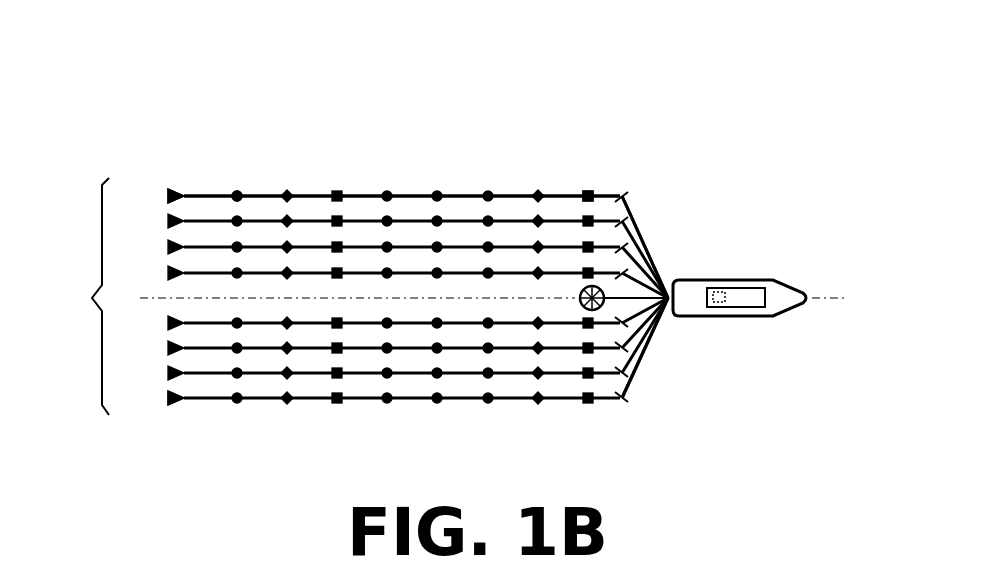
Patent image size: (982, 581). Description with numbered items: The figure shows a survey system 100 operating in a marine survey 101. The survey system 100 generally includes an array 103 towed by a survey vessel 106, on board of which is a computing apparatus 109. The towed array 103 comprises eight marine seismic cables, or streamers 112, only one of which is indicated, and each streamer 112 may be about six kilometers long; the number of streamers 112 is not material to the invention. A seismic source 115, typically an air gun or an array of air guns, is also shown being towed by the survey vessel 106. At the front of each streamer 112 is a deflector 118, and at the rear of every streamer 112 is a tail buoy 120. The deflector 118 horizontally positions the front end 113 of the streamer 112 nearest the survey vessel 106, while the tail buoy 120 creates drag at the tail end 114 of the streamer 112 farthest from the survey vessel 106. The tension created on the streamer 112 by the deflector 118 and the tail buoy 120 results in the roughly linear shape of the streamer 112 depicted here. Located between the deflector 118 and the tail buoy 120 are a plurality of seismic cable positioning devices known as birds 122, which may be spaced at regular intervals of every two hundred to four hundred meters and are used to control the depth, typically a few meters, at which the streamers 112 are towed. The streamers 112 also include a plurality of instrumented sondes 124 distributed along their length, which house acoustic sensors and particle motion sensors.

The survey system 100 is at (246, 114).
The marine survey 101 is at (94, 35).
The array 103 is at (368, 296).
The survey vessel 106 is at (776, 280).
The computing apparatus 109 is at (718, 309).
The streamer 112 is at (408, 193).
The front end 113 is at (616, 403).
The tail end 114 is at (185, 405).
The seismic source 115 is at (578, 298).
The deflector 118 is at (628, 193).
The tail buoy 120 is at (170, 190).
The birds 122 is at (585, 192).
The instrumented sondes 124 is at (234, 191).